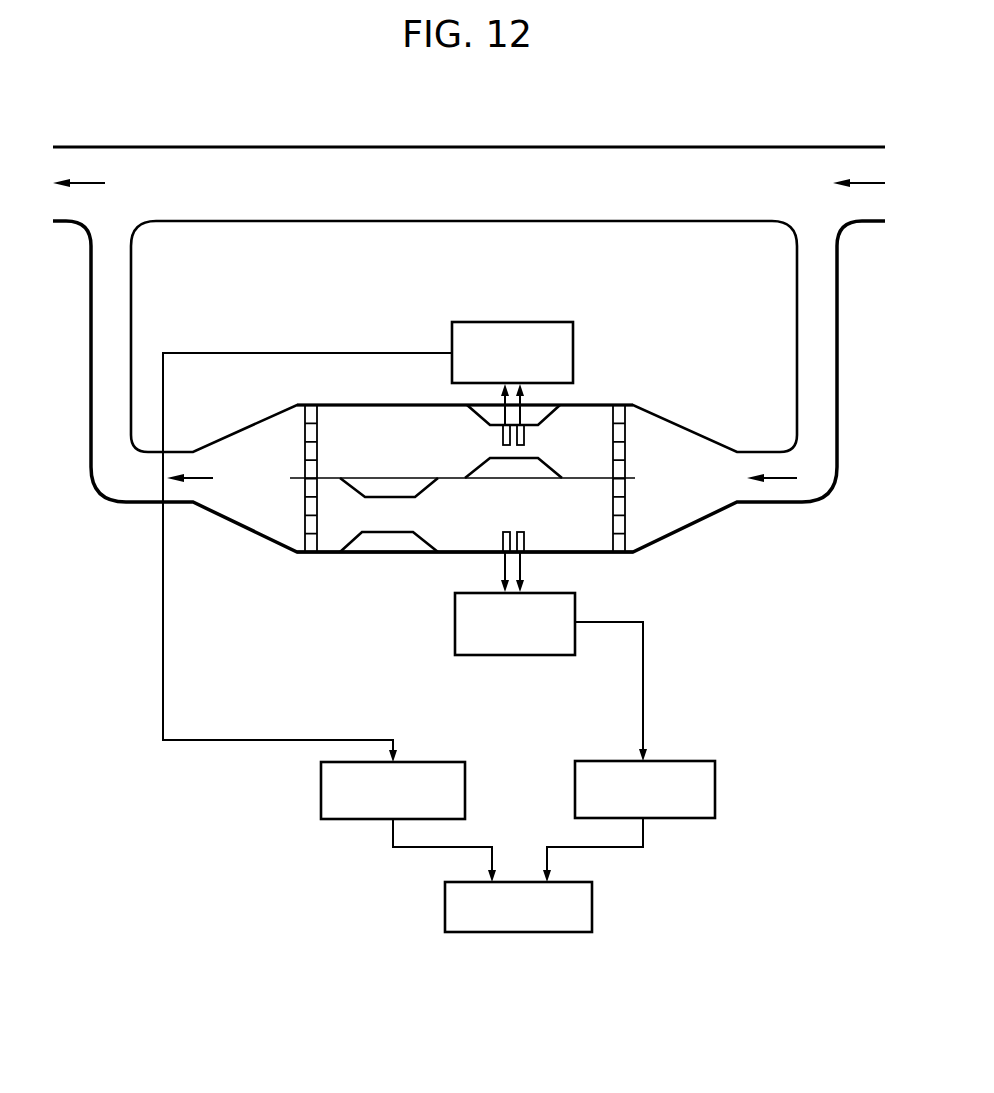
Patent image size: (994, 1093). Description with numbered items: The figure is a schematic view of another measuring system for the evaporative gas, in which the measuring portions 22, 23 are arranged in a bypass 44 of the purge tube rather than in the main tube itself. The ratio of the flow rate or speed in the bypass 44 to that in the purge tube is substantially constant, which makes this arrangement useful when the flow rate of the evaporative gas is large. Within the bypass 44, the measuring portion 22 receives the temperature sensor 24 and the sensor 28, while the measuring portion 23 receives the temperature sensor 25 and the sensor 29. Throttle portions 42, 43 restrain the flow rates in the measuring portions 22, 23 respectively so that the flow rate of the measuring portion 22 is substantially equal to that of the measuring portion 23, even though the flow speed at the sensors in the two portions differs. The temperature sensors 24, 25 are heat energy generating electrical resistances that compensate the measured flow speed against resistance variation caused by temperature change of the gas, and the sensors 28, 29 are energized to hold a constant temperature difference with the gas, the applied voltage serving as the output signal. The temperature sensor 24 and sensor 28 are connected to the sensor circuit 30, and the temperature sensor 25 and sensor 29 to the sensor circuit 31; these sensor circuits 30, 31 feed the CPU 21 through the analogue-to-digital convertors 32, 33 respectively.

The CPU 21 is at (593, 905).
The measuring portion 22 is at (612, 403).
The measuring portion 23 is at (590, 553).
The temperature sensor 24 is at (526, 432).
The temperature sensor 25 is at (524, 541).
The sensor 28 is at (503, 432).
The sensor 29 is at (503, 541).
The sensor circuit 30 is at (510, 322).
The sensor circuit 31 is at (538, 656).
The analogue-to-digital convertor 32 is at (466, 788).
The analogue-to-digital convertor 33 is at (716, 785).
The throttle portion 42 is at (470, 468).
The throttle portion 43 is at (390, 531).
The bypass 44 is at (837, 350).